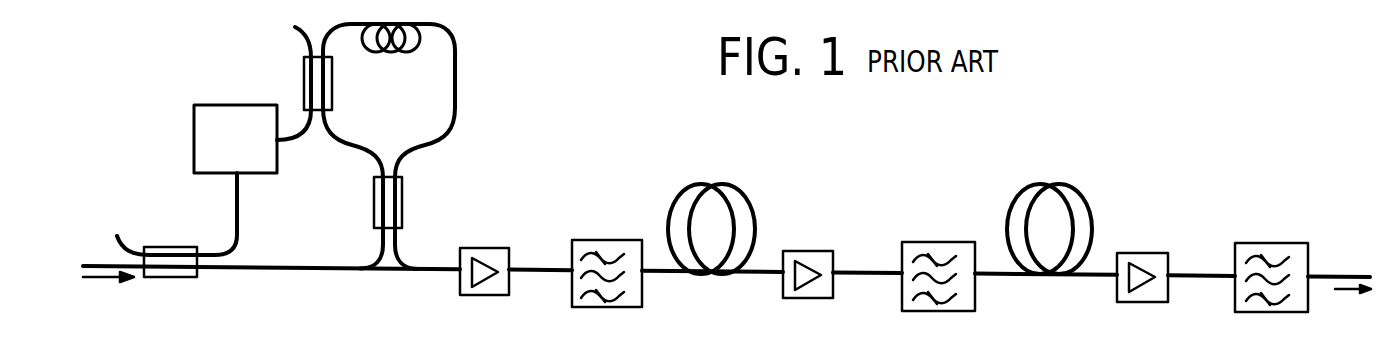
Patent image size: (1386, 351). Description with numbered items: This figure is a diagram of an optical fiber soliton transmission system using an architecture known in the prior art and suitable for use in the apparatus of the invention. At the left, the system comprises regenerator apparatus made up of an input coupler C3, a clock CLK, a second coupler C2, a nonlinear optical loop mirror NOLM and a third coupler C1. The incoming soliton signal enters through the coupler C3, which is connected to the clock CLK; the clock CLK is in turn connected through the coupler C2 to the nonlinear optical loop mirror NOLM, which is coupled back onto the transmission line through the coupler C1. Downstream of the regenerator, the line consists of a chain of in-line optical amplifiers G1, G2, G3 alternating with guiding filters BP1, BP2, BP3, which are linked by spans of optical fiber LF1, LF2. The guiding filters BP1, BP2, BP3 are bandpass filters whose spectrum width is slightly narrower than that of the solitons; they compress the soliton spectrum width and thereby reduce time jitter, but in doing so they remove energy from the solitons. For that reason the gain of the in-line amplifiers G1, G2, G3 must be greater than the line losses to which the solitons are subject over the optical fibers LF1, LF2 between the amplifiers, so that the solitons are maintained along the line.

The clock CLK is at (207, 112).
The coupler C1 is at (375, 222).
The coupler C2 is at (303, 87).
The coupler C3 is at (177, 247).
The nonlinear optical loop mirror NOLM is at (455, 55).
The in-line optical amplifier G1 is at (470, 248).
The in-line optical amplifier G2 is at (812, 251).
The in-line optical amplifier G3 is at (1135, 253).
The guiding filter BP1 is at (578, 240).
The guiding filter BP2 is at (957, 242).
The guiding filter BP3 is at (1262, 243).
The optical fiber LF1 is at (735, 185).
The optical fiber LF2 is at (1070, 185).